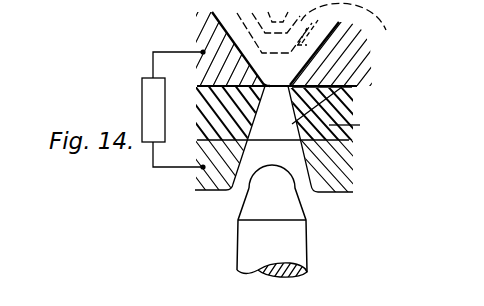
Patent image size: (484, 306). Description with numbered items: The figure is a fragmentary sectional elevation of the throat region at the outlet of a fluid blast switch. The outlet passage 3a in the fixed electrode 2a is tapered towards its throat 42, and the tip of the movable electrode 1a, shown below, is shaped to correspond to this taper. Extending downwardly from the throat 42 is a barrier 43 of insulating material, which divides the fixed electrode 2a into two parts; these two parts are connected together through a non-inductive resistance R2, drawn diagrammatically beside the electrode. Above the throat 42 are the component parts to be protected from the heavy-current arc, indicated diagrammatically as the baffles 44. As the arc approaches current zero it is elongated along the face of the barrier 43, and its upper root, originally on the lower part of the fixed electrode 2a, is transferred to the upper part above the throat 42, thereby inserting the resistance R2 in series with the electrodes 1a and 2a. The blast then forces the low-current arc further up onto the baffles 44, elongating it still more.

The fixed electrode 2a is at (219, 44).
The outlet passage 3a is at (355, 82).
The barrier 43 is at (360, 125).
The throat 42 is at (285, 83).
The baffles 44 is at (319, 28).
The non-inductive resistance R2 is at (153, 95).
The movable electrode 1a is at (297, 246).